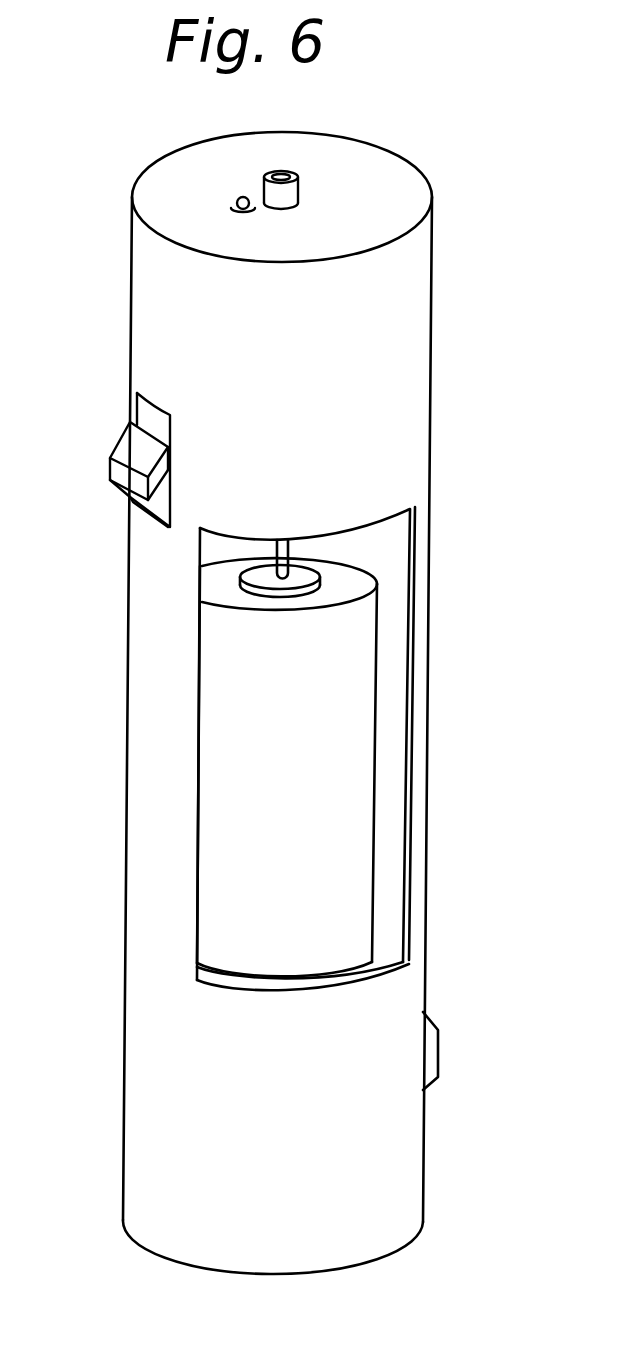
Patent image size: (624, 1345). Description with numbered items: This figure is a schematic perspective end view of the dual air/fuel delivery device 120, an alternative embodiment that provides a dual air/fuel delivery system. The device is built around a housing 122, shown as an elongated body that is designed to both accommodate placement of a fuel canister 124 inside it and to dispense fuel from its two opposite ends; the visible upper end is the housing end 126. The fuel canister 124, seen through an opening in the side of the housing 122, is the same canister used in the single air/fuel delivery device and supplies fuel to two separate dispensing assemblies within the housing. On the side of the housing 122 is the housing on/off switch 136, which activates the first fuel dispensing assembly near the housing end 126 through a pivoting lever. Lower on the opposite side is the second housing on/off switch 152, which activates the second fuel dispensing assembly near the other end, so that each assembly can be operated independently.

The dual air/fuel delivery device 120 is at (433, 353).
The housing 122 is at (407, 433).
The fuel canister 124 is at (347, 708).
The housing end 126 is at (405, 178).
The housing on/off switch 136 is at (130, 445).
The housing on/off switch 152 is at (430, 1062).